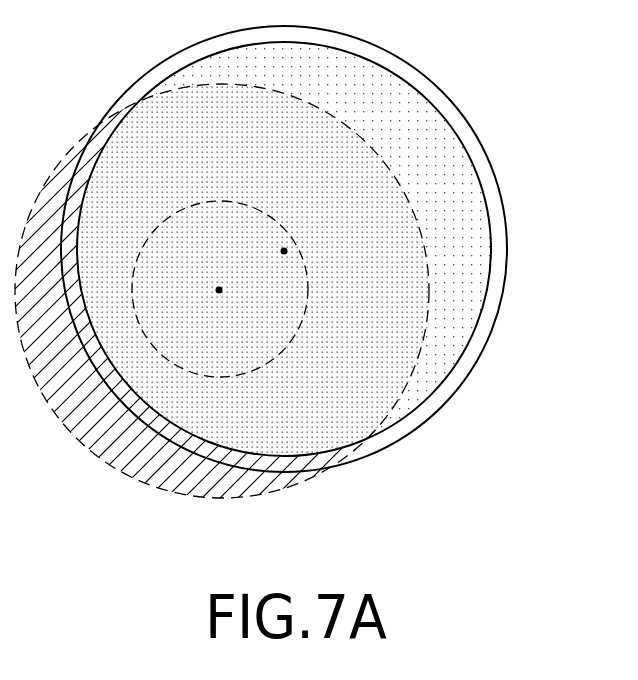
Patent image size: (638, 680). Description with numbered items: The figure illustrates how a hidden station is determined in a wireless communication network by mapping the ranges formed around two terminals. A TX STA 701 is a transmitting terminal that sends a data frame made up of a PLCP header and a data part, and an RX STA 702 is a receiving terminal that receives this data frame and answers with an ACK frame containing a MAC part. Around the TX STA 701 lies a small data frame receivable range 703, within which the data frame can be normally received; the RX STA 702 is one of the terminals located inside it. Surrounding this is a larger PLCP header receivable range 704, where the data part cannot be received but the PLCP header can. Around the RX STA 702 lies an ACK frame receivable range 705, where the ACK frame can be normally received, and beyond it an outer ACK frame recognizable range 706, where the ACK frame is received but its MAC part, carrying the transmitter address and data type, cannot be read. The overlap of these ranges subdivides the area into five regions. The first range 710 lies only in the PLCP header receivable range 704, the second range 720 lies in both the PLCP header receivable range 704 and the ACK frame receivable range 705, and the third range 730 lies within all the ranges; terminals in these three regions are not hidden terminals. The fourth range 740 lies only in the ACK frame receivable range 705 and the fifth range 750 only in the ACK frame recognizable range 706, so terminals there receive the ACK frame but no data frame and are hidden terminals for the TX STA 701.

The TX STA 701 is at (220, 317).
The RX STA 702 is at (285, 226).
The data frame receivable range 703 is at (262, 370).
The PLCP header receivable range 704 is at (221, 497).
The ACK frame receivable range 705 is at (393, 425).
The ACK frame recognizable range 706 is at (463, 388).
The first range 710 is at (72, 388).
The second range 720 is at (343, 368).
The third range 730 is at (202, 248).
The fourth range 740 is at (378, 112).
The fifth range 750 is at (285, 33).